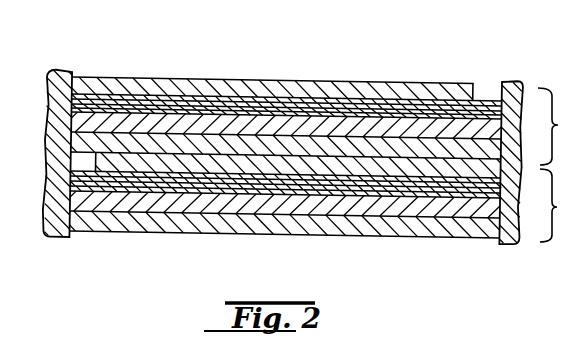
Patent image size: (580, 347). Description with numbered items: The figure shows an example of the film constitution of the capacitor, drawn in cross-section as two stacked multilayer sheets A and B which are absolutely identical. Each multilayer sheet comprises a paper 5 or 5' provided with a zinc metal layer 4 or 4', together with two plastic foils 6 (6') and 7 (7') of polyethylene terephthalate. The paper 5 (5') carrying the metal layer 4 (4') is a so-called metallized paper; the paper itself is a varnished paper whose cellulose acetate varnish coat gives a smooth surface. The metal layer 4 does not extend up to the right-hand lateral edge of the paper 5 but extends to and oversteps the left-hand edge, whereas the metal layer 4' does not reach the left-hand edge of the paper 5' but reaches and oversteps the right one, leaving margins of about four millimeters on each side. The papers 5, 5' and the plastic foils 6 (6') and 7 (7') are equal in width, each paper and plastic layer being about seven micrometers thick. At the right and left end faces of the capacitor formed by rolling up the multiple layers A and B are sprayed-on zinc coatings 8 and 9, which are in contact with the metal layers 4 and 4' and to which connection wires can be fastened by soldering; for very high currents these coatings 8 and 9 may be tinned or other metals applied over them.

The zinc metal layer 4 is at (272, 75).
The paper 5 is at (286, 83).
The plastic foil 6 is at (286, 93).
The plastic foil 7 is at (286, 102).
The zinc metal layer 4' is at (285, 211).
The paper 5' is at (285, 219).
The plastic foil 6' is at (285, 229).
The plastic foil 7' is at (285, 239).
The sprayed-on metal coating 8 is at (66, 72).
The sprayed-on metal coating 9 is at (508, 82).
The multilayer sheet A is at (557, 126).
The multilayer sheet B is at (557, 205).